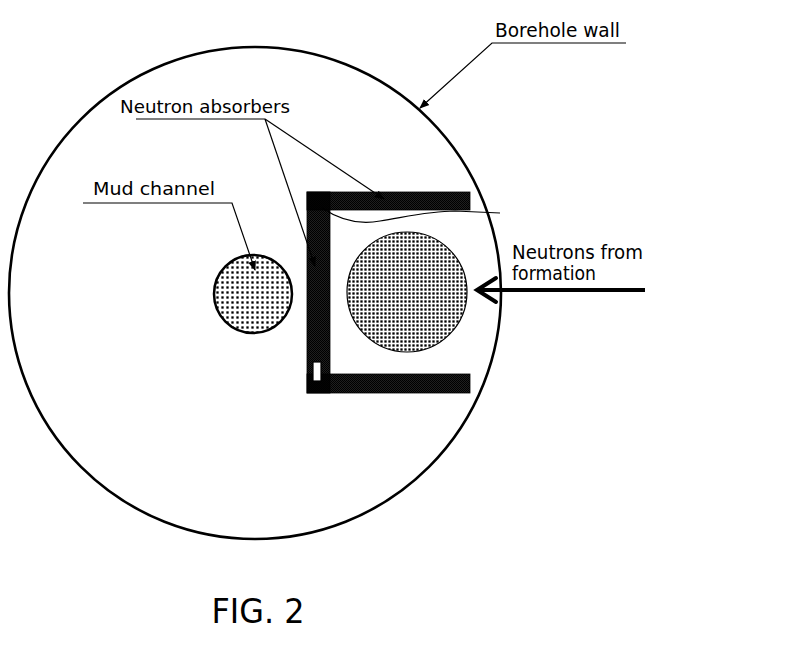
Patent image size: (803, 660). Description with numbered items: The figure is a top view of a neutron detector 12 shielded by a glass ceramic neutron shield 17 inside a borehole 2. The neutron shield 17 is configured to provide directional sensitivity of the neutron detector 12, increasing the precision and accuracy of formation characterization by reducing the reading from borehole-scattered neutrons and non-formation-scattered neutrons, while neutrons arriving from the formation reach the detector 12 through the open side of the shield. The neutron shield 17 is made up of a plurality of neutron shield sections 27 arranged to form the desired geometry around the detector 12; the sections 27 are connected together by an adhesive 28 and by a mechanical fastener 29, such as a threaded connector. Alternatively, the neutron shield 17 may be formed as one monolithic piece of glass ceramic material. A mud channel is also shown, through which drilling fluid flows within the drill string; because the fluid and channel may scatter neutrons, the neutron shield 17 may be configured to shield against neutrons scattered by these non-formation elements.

The borehole 2 is at (185, 57).
The neutron detector 12 is at (406, 328).
The neutron shield 17 is at (514, 316).
The neutron shield section 27 is at (443, 195).
The adhesive 28 is at (458, 216).
The mechanical fastener 29 is at (312, 366).